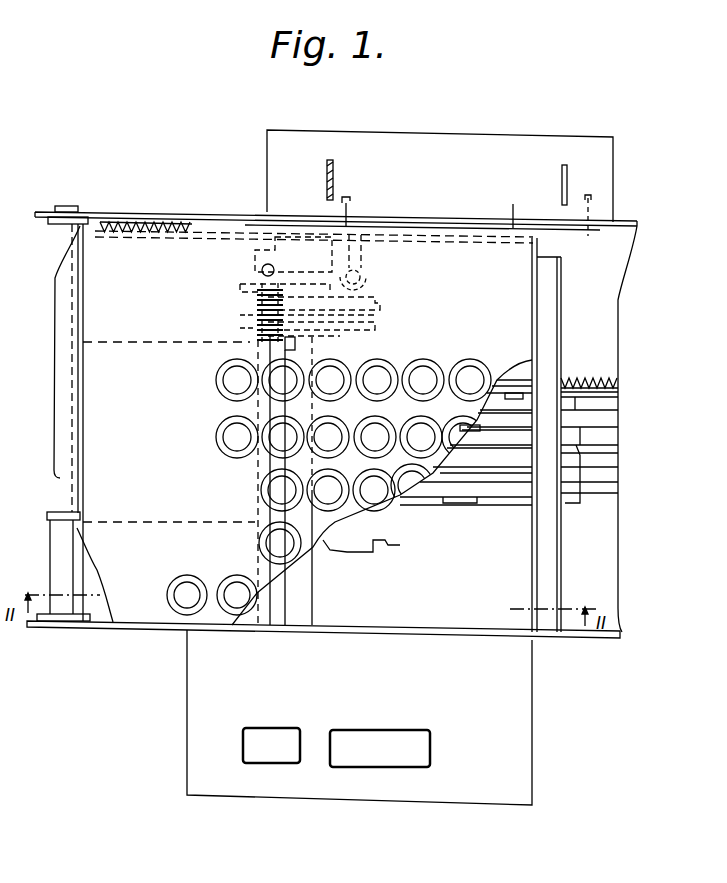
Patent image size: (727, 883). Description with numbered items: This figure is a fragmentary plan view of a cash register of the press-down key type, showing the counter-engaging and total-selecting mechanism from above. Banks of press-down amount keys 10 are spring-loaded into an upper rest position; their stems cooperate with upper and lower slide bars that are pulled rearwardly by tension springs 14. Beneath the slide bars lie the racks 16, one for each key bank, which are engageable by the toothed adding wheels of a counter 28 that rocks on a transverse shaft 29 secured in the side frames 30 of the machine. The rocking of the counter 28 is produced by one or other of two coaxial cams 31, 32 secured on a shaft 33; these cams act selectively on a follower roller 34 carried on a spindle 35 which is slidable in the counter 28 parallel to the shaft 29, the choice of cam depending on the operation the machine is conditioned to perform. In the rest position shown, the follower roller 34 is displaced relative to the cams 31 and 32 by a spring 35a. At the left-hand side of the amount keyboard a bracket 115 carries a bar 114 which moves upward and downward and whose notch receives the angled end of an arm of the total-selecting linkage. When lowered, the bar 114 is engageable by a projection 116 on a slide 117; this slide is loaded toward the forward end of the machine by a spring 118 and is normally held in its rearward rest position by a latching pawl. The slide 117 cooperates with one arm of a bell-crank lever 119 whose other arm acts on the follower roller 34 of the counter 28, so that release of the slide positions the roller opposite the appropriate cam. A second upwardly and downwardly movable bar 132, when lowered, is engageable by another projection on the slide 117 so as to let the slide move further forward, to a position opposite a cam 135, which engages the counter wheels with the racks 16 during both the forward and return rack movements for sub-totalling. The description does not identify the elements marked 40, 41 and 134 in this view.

The amount keys 10 is at (427, 360).
The tension springs 14 is at (596, 376).
The racks 16 is at (600, 492).
The counter 28 is at (139, 340).
The transverse shaft 29 is at (62, 503).
The side frames 30 is at (636, 224).
The cam 31 is at (385, 330).
The cam 32 is at (378, 300).
The shaft 33 is at (309, 599).
The follower roller 34 is at (243, 286).
The spindle 35 is at (262, 465).
The spring 35a is at (243, 345).
The push button 40 is at (395, 728).
The push button 41 is at (281, 728).
The bar 114 is at (334, 166).
The bracket 115 is at (476, 132).
The projection 116 is at (351, 197).
The slide 117 is at (518, 205).
The spring 118 is at (153, 236).
The bell-crank lever 119 is at (370, 258).
The bar 132 is at (561, 174).
The pin 134 is at (590, 190).
The cam 135 is at (245, 319).